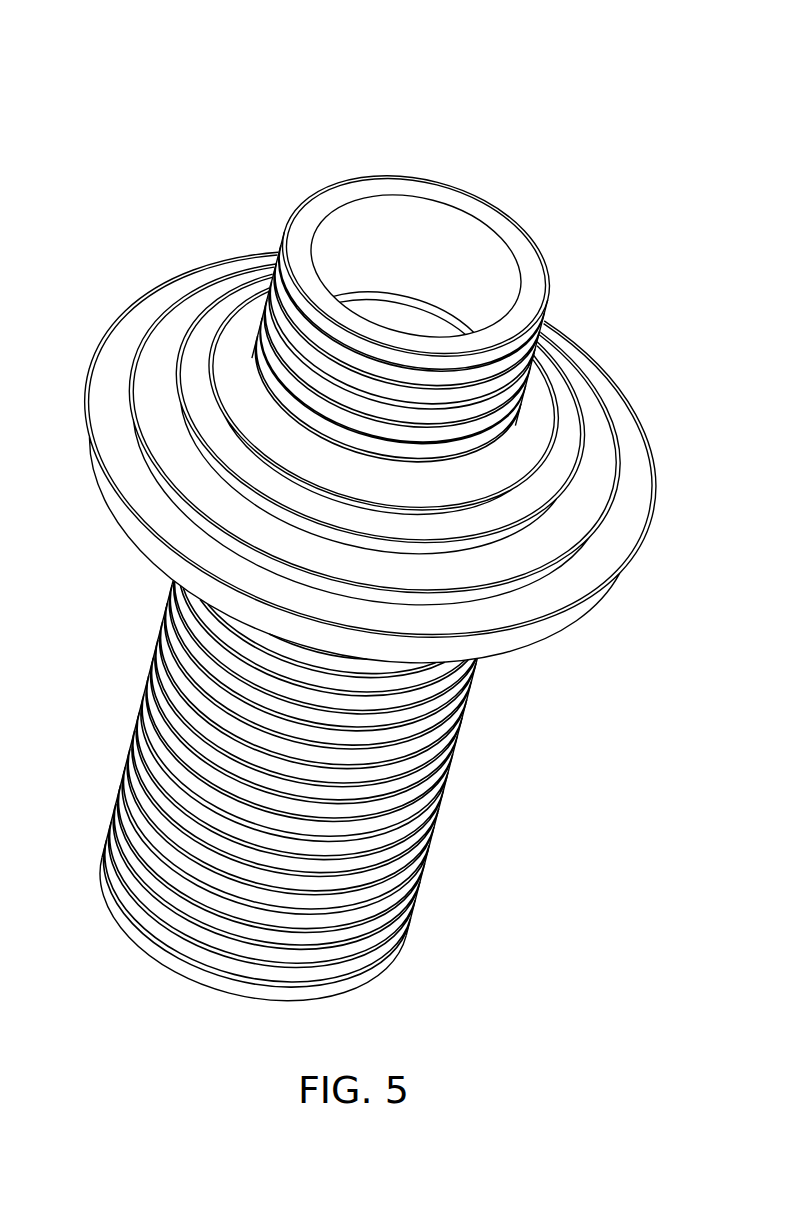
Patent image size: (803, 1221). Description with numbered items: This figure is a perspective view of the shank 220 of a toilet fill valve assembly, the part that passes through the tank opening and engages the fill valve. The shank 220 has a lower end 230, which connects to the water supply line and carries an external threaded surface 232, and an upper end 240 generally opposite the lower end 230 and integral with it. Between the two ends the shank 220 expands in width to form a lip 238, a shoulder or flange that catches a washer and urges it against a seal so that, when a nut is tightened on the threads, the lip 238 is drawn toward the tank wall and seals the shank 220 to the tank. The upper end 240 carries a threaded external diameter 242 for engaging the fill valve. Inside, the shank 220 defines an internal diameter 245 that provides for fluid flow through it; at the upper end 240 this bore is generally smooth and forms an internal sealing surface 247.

The shank 220 is at (645, 68).
The lower end 230 is at (347, 980).
The external threaded surface 232 is at (432, 790).
The lip 238 is at (543, 428).
The upper end 240 is at (543, 280).
The threaded external diameter 242 is at (537, 353).
The internal diameter 245 is at (362, 215).
The internal sealing surface 247 is at (453, 223).